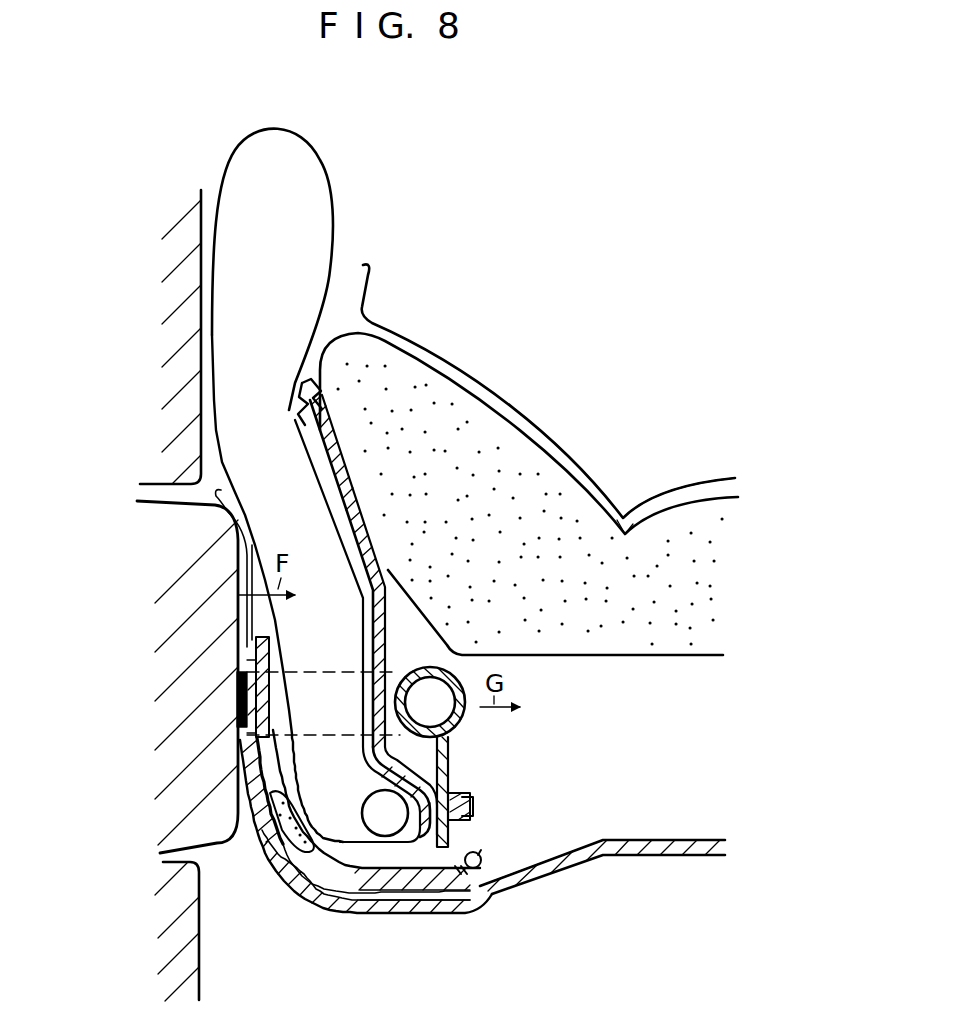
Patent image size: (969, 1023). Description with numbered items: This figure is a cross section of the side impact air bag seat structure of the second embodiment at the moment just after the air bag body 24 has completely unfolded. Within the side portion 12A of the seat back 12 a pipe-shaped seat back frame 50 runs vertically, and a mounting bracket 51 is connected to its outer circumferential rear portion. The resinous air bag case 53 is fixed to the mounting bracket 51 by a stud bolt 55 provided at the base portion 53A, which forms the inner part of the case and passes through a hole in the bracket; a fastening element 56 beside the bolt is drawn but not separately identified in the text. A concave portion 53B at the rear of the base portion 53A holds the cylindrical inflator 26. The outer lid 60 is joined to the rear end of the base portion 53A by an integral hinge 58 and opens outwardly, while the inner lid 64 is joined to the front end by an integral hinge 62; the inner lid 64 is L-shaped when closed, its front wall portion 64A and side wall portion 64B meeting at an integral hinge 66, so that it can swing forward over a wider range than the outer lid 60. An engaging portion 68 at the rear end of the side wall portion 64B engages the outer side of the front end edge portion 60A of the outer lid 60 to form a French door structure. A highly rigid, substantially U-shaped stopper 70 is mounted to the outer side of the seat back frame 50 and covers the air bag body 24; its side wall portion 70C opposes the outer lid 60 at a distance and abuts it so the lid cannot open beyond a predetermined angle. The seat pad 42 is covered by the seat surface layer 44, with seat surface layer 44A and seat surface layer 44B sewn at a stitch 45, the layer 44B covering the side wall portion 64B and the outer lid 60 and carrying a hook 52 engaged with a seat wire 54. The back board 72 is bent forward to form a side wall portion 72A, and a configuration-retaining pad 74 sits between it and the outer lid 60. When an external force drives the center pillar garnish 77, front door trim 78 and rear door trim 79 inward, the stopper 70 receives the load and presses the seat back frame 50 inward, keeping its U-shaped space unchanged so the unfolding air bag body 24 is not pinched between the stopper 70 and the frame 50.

The seat back 12 is at (697, 443).
The side portion 12A is at (470, 352).
The air bag body 24 is at (222, 168).
The inflator 26 is at (307, 892).
The seat pad 42 is at (378, 360).
The seat surface layer 44 is at (722, 478).
The seat surface layer 44A is at (500, 394).
The seat surface layer 44B is at (240, 552).
The stitch 45 is at (628, 498).
The seat back frame 50 is at (470, 712).
The mounting bracket 51 is at (449, 768).
The hook 52 is at (532, 882).
The air bag case 53 is at (88, 422).
The base portion 53A is at (430, 878).
The concave portion 53B is at (412, 870).
The seat wire 54 is at (497, 903).
The stud bolt 55 is at (473, 805).
The nut 56 is at (465, 828).
The integral hinge 58 is at (337, 882).
The outer lid 60 is at (235, 613).
The front end edge portion 60A is at (252, 645).
The integral hinge 62 is at (398, 578).
The inner lid 64 is at (229, 573).
The front wall portion 64A is at (330, 513).
The side wall portion 64B is at (307, 447).
The integral hinge 66 is at (362, 480).
The engaging portion 68 is at (297, 400).
The stopper 70 is at (236, 712).
The side wall portion 70C is at (258, 708).
The back board 72 is at (688, 856).
The side wall portion 72A is at (232, 798).
The configuration-retaining pad 74 is at (283, 833).
The center pillar garnish 77 is at (172, 673).
The front door trim 78 is at (165, 362).
The rear door trim 79 is at (163, 930).